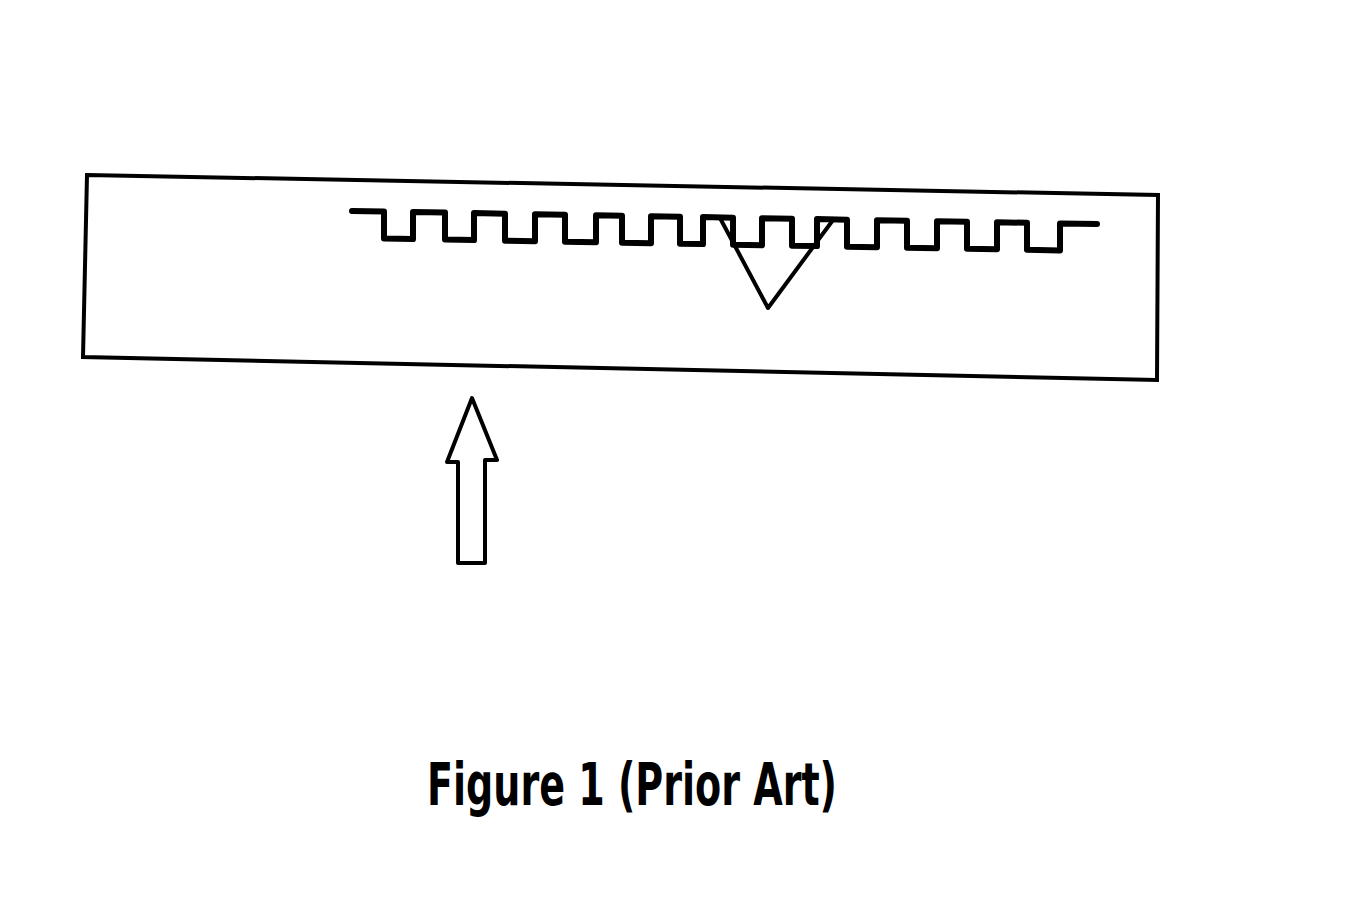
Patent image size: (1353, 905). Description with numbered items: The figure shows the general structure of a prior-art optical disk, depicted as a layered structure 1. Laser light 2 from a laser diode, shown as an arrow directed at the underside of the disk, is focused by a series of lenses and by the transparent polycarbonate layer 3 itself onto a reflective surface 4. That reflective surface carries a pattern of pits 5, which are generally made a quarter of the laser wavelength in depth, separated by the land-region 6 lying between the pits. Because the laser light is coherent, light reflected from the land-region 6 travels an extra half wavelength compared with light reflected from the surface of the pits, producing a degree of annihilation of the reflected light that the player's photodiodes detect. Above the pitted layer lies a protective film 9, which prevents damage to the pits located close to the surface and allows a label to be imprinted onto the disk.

The layered structure 1 is at (714, 305).
The laser light 2 is at (492, 532).
The transparent polycarbonate layer 3 is at (875, 330).
The reflective surface 4 is at (776, 294).
The pits 5 is at (772, 222).
The land-region 6 is at (869, 247).
The protective film 9 is at (537, 200).